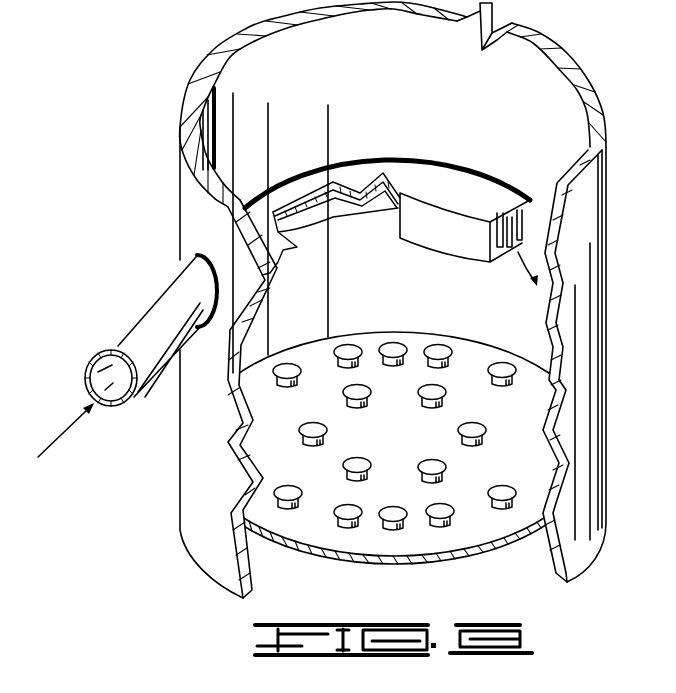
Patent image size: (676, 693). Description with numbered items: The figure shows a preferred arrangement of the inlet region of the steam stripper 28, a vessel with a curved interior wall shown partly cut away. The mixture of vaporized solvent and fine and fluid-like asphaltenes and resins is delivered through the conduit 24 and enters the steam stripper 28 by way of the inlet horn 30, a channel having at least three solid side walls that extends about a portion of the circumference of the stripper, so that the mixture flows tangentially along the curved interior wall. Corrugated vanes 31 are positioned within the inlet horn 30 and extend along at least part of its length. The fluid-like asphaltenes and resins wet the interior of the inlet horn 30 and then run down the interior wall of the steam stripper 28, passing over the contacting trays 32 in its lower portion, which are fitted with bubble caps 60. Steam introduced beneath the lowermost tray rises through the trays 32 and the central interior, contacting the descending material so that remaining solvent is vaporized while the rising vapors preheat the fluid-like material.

The conduit 24 is at (127, 328).
The steam stripper 28 is at (185, 208).
The inlet horn 30 is at (467, 188).
The vanes 31 is at (333, 217).
The contacting trays 32 is at (377, 562).
The bubble caps 60 is at (447, 507).